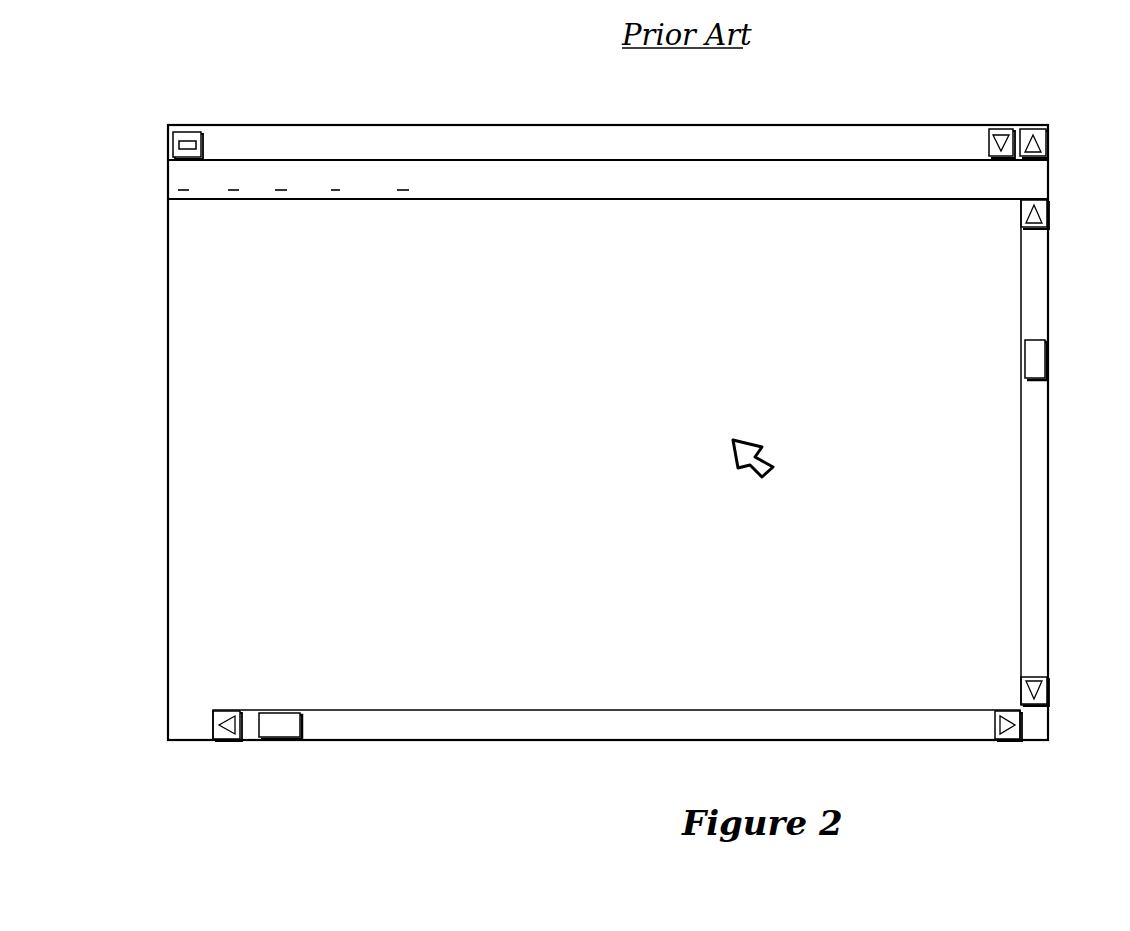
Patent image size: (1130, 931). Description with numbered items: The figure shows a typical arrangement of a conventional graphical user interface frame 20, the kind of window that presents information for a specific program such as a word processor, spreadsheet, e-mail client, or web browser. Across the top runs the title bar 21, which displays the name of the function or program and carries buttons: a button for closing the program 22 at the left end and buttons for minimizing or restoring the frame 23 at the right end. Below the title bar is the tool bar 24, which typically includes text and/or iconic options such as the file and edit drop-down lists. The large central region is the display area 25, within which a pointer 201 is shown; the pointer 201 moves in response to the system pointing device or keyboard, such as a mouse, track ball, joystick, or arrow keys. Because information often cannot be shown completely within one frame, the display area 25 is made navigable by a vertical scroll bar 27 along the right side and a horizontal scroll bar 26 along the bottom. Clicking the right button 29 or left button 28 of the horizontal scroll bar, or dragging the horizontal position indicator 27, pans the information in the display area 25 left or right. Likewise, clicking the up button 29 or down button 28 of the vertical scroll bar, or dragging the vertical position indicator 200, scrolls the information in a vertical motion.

The frame 20 is at (167, 332).
The title bar 21 is at (437, 142).
The button for closing the program 22 is at (190, 131).
The buttons for minimizing or restoring the frame 23 is at (1013, 128).
The tool bar 24 is at (491, 173).
The display area 25 is at (223, 421).
The horizontal scroll bar 26 is at (428, 742).
The vertical scroll bar 27 is at (1051, 481).
The left button 28 is at (230, 738).
The right button 29 is at (1050, 212).
The vertical position indicator 200 is at (1037, 361).
The pointer 201 is at (758, 453).